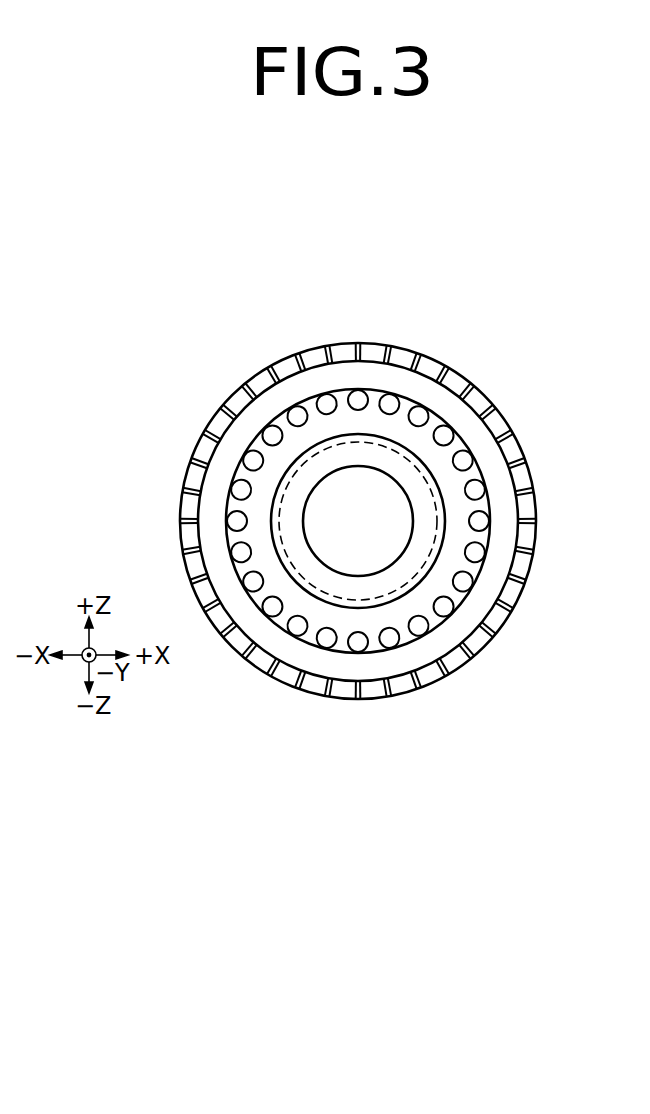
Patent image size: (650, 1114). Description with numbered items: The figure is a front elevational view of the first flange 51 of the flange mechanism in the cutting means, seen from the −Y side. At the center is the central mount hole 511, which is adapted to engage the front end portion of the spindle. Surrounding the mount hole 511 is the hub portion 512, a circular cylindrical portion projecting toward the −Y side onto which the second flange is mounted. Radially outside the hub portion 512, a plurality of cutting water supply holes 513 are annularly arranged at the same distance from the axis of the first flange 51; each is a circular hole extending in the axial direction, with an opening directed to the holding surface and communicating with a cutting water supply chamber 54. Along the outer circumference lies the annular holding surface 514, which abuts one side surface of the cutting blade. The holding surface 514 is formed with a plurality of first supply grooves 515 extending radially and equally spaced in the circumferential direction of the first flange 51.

The first flange 51 is at (178, 356).
The cutting water supply chamber 54 is at (497, 463).
The central mount hole 511 is at (395, 521).
The hub portion 512 is at (287, 520).
The cutting water supply holes 513 is at (468, 458).
The annular holding surface 514 is at (216, 418).
The first supply grooves 515 is at (470, 648).